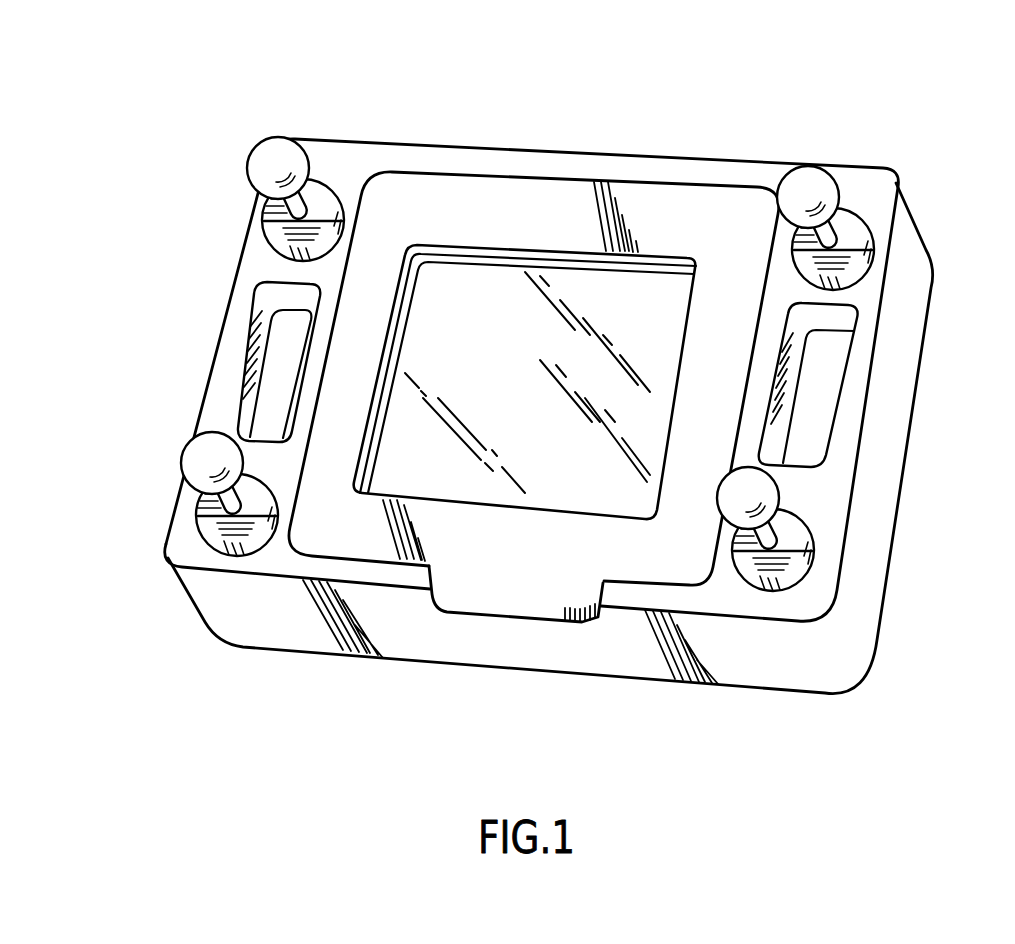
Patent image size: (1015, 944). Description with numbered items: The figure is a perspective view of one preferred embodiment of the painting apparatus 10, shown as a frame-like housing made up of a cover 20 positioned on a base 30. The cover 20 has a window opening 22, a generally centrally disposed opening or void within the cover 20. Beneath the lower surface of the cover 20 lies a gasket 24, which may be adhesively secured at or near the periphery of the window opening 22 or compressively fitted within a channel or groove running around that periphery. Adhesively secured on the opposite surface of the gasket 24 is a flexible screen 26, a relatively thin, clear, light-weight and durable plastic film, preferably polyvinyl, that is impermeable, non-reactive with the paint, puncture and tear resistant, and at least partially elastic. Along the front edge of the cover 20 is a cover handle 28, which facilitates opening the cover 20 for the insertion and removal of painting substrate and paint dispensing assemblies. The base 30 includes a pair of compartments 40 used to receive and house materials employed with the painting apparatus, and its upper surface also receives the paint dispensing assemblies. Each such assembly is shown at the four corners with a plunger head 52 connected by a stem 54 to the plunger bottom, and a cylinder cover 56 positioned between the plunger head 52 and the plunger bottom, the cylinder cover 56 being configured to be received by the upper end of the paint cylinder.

The painting apparatus 10 is at (632, 152).
The cover 20 is at (397, 192).
The window opening 22 is at (446, 248).
The gasket 24 is at (663, 265).
The flexible screen 26 is at (477, 297).
The cover handle 28 is at (518, 590).
The base 30 is at (883, 477).
The compartments 40 is at (262, 403).
The plunger head 52 is at (273, 165).
The stem 54 is at (281, 205).
The cylinder cover 56 is at (288, 256).